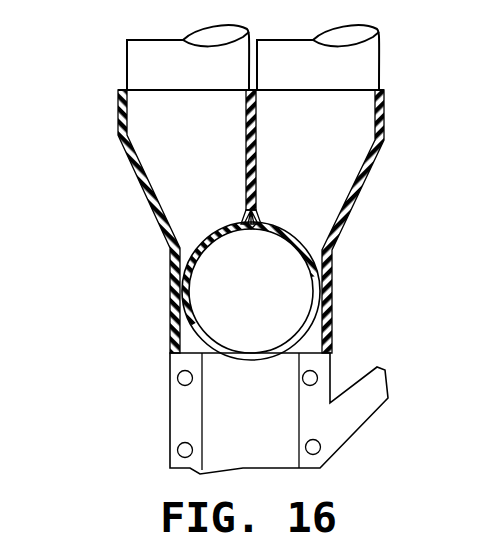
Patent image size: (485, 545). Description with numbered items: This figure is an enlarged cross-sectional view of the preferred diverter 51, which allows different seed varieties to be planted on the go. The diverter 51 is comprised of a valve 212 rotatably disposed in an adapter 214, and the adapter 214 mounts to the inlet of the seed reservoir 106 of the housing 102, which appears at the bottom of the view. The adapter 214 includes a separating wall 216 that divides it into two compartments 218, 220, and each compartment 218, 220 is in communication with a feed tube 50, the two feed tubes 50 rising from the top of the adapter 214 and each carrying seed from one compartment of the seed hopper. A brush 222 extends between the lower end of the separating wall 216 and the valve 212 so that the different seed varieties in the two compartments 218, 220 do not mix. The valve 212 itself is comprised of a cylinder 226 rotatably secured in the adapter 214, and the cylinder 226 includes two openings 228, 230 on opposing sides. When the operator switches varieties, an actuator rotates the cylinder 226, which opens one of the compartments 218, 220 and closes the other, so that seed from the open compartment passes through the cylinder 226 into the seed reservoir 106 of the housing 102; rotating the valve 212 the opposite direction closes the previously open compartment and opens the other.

The feed tube 50 is at (140, 65).
The diverter 51 is at (97, 182).
The housing 102 is at (182, 412).
The seed reservoir 106 is at (238, 428).
The valve 212 is at (205, 228).
The adapter 214 is at (118, 122).
The separating wall 216 is at (247, 137).
The compartment 218 is at (200, 134).
The compartment 220 is at (347, 134).
The brush 222 is at (262, 218).
The cylinder 226 is at (195, 248).
The opening 228 is at (213, 243).
The opening 230 is at (282, 345).